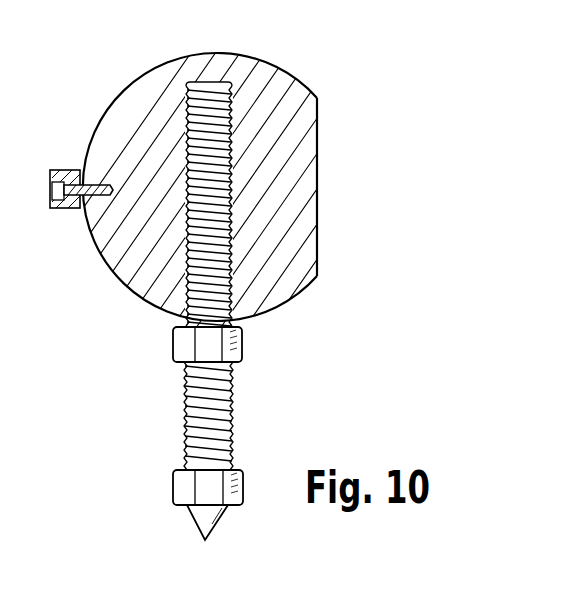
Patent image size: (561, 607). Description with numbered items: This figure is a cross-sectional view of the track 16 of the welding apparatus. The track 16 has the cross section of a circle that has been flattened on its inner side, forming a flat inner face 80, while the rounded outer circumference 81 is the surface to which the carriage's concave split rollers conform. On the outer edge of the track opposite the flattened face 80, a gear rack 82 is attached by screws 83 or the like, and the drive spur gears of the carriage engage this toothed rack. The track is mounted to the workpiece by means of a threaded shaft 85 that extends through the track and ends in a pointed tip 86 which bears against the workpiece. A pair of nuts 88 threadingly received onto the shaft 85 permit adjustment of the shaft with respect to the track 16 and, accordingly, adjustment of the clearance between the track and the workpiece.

The track 16 is at (276, 47).
The flattened inner face 80 is at (318, 134).
The outer circumference 81 is at (98, 128).
The gear rack 82 is at (75, 213).
The screws 83 is at (60, 190).
The threaded shaft 85 is at (234, 407).
The pointed tip 86 is at (212, 530).
The nuts 88 is at (178, 345).